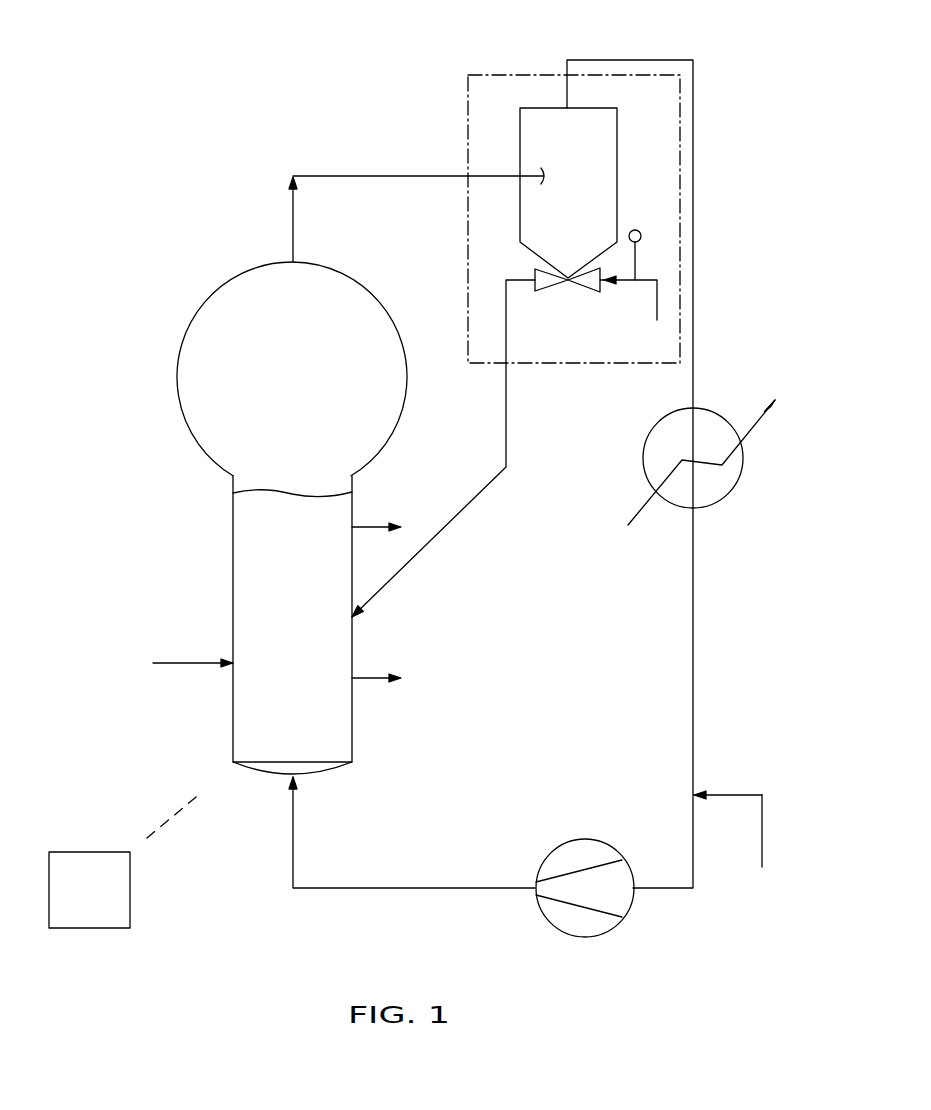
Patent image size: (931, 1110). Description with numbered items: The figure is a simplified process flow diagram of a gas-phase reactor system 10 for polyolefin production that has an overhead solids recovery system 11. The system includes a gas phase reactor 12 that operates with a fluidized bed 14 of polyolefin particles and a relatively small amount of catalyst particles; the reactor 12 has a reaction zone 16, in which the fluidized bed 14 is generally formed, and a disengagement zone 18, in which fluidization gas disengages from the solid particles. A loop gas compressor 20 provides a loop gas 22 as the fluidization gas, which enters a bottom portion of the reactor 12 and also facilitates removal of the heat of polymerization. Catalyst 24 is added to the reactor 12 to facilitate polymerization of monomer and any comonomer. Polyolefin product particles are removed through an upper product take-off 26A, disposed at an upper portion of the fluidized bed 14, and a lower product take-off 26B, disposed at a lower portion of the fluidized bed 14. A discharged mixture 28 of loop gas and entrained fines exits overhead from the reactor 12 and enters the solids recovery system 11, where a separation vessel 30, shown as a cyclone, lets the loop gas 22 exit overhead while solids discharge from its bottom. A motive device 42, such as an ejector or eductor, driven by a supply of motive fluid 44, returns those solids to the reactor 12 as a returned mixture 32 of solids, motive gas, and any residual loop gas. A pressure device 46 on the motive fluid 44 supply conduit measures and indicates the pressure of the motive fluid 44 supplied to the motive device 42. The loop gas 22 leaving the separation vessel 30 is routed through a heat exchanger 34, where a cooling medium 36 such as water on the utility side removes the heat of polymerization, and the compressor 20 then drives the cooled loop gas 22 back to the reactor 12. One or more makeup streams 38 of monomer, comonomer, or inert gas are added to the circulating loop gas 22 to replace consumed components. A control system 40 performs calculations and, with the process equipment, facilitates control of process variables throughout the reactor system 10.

The gas-phase reactor system 10 is at (135, 41).
The overhead solids recovery system 11 is at (500, 75).
The gas phase reactor 12 is at (253, 267).
The fluidized bed 14 is at (295, 493).
The reaction zone 16 is at (322, 710).
The disengagement zone 18 is at (210, 387).
The loop gas compressor 20 is at (582, 937).
The loop gas 22 is at (662, 60).
The catalyst 24 is at (185, 663).
The upper product take-off 26A is at (372, 522).
The lower product take-off 26B is at (370, 677).
The discharged mixture 28 is at (340, 175).
The separation vessel 30 is at (617, 157).
The returned mixture 32 is at (506, 393).
The heat exchanger 34 is at (645, 450).
The cooling medium 36 is at (642, 510).
The makeup streams 38 is at (762, 840).
The control system 40 is at (130, 892).
The motive device 42 is at (582, 292).
The motive fluid 44 is at (657, 300).
The pressure device 46 is at (640, 233).